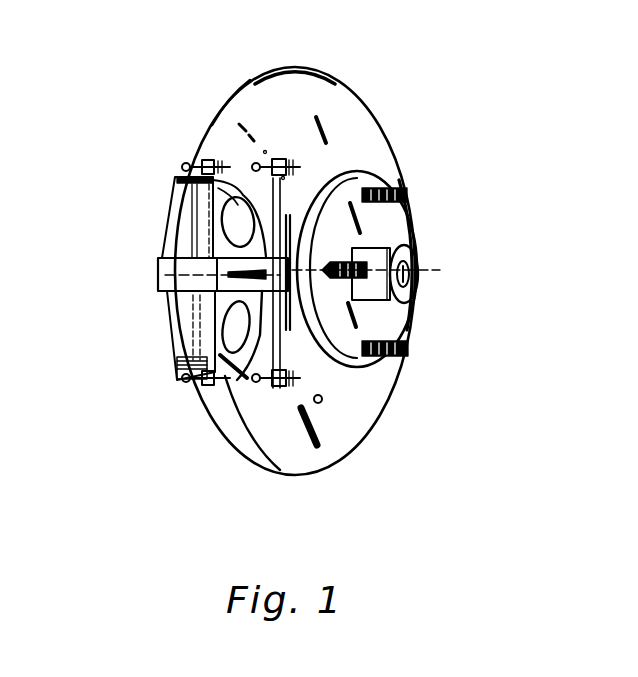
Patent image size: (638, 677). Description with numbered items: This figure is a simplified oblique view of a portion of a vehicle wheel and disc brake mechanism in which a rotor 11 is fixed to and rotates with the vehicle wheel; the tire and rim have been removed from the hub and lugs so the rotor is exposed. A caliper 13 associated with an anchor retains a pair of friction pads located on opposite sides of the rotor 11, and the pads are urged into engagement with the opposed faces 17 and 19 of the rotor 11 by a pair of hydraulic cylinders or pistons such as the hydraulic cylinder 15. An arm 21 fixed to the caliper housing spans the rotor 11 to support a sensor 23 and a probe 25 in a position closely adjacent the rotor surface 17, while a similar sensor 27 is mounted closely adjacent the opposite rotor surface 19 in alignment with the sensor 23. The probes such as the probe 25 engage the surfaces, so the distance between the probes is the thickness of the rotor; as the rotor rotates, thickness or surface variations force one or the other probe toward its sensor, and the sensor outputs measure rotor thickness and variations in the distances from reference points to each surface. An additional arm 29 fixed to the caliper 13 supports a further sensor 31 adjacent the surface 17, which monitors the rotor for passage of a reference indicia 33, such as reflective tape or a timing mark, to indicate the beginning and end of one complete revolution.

The rotor 11 is at (377, 123).
The caliper 13 is at (180, 304).
The hydraulic cylinder 15 is at (212, 386).
The rotor surface 17 is at (370, 153).
The rotor surface 19 is at (233, 117).
The arm 21 is at (283, 178).
The sensor 23 is at (265, 152).
The probe 25 is at (258, 163).
The sensor 27 is at (181, 166).
The additional arm 29 is at (267, 380).
The further sensor 31 is at (261, 455).
The reference indicia 33 is at (322, 405).